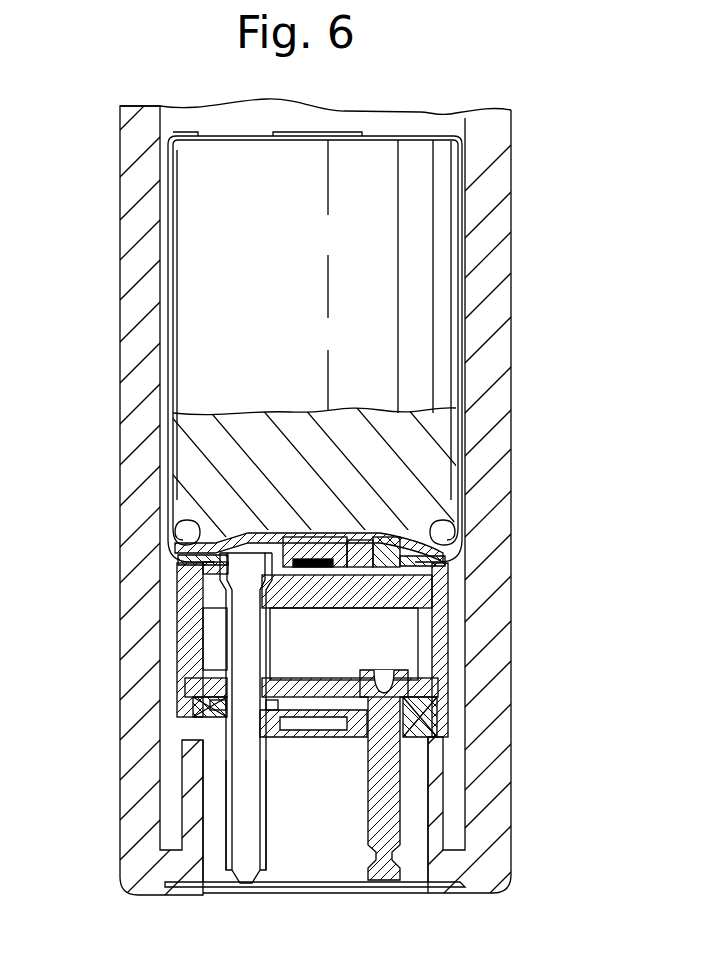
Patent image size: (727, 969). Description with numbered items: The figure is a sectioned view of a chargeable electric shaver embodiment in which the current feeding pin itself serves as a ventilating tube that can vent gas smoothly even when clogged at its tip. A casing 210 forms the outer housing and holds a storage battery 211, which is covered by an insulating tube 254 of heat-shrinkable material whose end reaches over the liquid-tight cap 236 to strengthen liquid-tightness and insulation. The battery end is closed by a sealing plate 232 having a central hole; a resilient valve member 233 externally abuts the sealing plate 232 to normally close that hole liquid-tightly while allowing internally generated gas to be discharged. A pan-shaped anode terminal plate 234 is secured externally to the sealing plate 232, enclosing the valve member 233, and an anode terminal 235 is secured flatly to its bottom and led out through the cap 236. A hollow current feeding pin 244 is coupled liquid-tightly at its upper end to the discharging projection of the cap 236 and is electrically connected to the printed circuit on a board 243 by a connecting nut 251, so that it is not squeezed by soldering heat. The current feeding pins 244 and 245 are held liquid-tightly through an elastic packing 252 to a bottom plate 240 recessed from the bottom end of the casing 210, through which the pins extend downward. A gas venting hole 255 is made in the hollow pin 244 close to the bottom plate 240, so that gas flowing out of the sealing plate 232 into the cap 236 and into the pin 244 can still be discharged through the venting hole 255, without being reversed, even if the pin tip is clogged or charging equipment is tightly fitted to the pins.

The casing 210 is at (490, 222).
The insulating tube 254 is at (455, 268).
The storage battery 211 is at (445, 306).
The valve member 233 is at (313, 533).
The sealing plate 232 is at (407, 532).
The liquid-tight cap 236 is at (365, 568).
The anode terminal 235 is at (220, 592).
The anode terminal plate 234 is at (305, 588).
The connecting nut 251 is at (195, 672).
The board 243 is at (303, 682).
The elastic packing 252 is at (425, 712).
The bottom plate 240 is at (332, 735).
The current feeding pin 245 is at (390, 765).
The current feeding pin 244 is at (226, 870).
The gas venting hole 255 is at (263, 753).